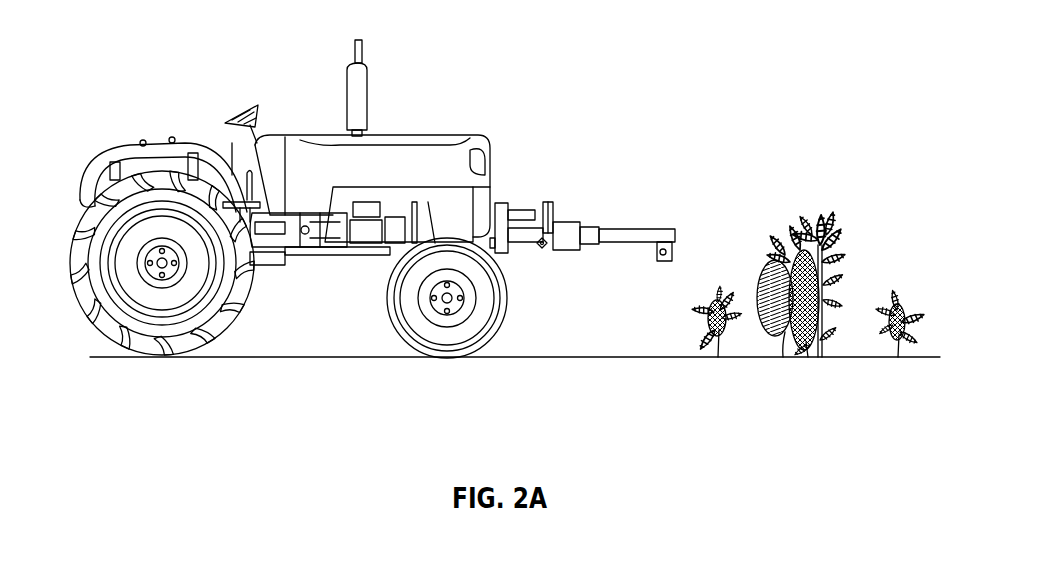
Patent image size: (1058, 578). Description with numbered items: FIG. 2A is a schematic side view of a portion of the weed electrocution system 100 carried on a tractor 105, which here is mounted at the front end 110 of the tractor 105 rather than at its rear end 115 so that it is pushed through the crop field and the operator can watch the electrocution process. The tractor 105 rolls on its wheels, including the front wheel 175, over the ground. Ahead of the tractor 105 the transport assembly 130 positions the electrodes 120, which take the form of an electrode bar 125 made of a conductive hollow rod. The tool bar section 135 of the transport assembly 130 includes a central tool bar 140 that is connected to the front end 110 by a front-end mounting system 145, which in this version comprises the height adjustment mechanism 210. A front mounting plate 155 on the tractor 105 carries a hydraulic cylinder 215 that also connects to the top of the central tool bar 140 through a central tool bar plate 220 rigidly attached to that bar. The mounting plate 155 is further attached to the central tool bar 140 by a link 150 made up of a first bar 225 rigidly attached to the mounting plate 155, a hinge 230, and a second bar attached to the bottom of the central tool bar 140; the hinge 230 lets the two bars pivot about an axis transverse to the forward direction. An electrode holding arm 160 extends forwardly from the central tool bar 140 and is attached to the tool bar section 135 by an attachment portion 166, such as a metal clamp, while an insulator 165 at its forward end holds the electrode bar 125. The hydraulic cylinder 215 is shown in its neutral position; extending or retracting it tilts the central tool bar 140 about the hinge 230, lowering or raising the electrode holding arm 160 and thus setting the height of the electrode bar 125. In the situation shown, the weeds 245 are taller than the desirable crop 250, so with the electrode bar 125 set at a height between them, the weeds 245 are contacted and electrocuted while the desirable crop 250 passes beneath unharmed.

The weed electrocution system 100 is at (620, 171).
The tractor 105 is at (295, 62).
The front end 110 is at (487, 88).
The rear end 115 is at (95, 100).
The electrode 120 is at (705, 243).
The electrode bar 125 is at (676, 273).
The transport assembly 130 is at (616, 197).
The tool bar section 135 is at (616, 211).
The central tool bar 140 is at (567, 250).
The front-end mounting system 145 is at (563, 198).
The link 150 is at (535, 283).
The front mounting plate 155 is at (500, 203).
The electrode holding arm 160 is at (650, 229).
The insulator 165 is at (659, 262).
The attachment portion 166 is at (590, 226).
The front wheel 175 is at (400, 342).
The height adjustment mechanism 210 is at (555, 167).
The hydraulic cylinder 215 is at (528, 207).
The central tool bar plate 220 is at (553, 205).
The first bar 225 is at (523, 245).
The hinge 230 is at (543, 249).
The weeds 245 is at (850, 212).
The desirable crop 250 is at (724, 380).